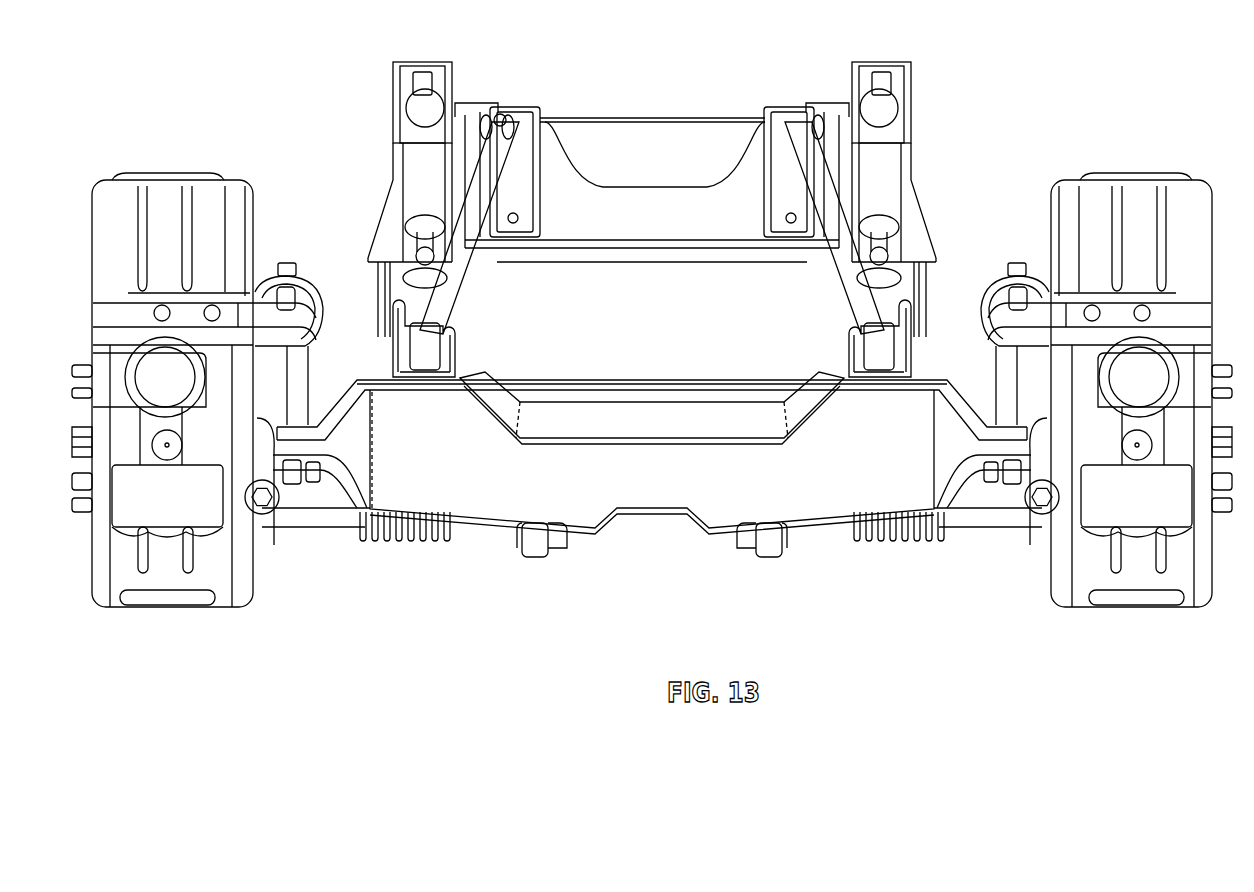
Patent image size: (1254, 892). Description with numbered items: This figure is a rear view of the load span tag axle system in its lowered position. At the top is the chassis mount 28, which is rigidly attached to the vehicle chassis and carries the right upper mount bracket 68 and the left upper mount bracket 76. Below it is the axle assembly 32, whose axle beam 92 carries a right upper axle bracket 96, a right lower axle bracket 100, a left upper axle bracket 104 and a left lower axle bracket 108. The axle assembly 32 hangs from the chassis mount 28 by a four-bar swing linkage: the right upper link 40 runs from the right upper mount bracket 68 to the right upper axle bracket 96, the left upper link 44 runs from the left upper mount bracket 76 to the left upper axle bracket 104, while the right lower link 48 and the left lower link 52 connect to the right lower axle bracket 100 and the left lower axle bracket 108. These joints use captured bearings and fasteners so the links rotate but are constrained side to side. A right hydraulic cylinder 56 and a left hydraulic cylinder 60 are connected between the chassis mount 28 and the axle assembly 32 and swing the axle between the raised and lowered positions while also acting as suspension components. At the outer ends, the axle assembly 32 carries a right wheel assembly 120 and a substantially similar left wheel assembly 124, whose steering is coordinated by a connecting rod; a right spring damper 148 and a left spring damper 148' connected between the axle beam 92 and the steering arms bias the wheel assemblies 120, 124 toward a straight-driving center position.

The chassis mount 28 is at (640, 138).
The axle assembly 32 is at (654, 525).
The right upper link 40 is at (838, 218).
The left upper link 44 is at (497, 118).
The right lower link 48 is at (773, 557).
The left lower link 52 is at (530, 558).
The right hydraulic cylinder 56 is at (893, 160).
The left hydraulic cylinder 60 is at (412, 166).
The right upper mount bracket 68 is at (763, 118).
The left upper mount bracket 76 is at (540, 125).
The axle beam 92 is at (650, 420).
The right upper axle bracket 96 is at (852, 358).
The right lower axle bracket 100 is at (743, 550).
The left upper axle bracket 104 is at (448, 354).
The left lower axle bracket 108 is at (562, 548).
The right wheel assembly 120 is at (1050, 598).
The left wheel assembly 124 is at (252, 630).
The right spring damper 148 is at (909, 559).
The left spring damper 148' is at (405, 560).